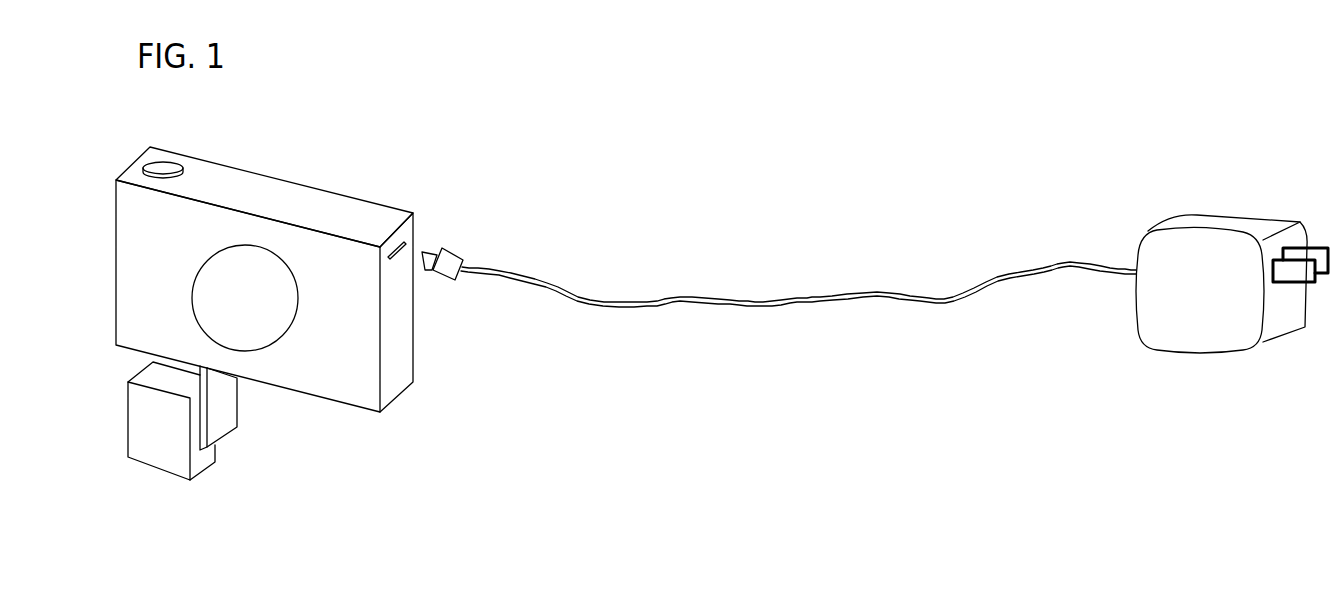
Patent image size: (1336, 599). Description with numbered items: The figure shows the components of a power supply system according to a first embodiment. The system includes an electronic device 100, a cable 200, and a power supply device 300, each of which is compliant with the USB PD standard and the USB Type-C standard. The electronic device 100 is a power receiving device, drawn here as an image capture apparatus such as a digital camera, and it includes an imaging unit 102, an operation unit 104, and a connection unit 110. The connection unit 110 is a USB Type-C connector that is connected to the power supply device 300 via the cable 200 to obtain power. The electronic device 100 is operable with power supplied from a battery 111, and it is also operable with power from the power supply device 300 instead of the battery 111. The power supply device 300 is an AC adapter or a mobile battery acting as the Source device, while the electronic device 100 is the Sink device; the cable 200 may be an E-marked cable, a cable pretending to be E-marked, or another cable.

The electronic device 100 is at (290, 181).
The imaging unit 102 is at (300, 301).
The operation unit 104 is at (163, 162).
The connection unit 110 is at (413, 240).
The battery 111 is at (130, 453).
The cable 200 is at (503, 272).
The power supply device 300 is at (1238, 212).